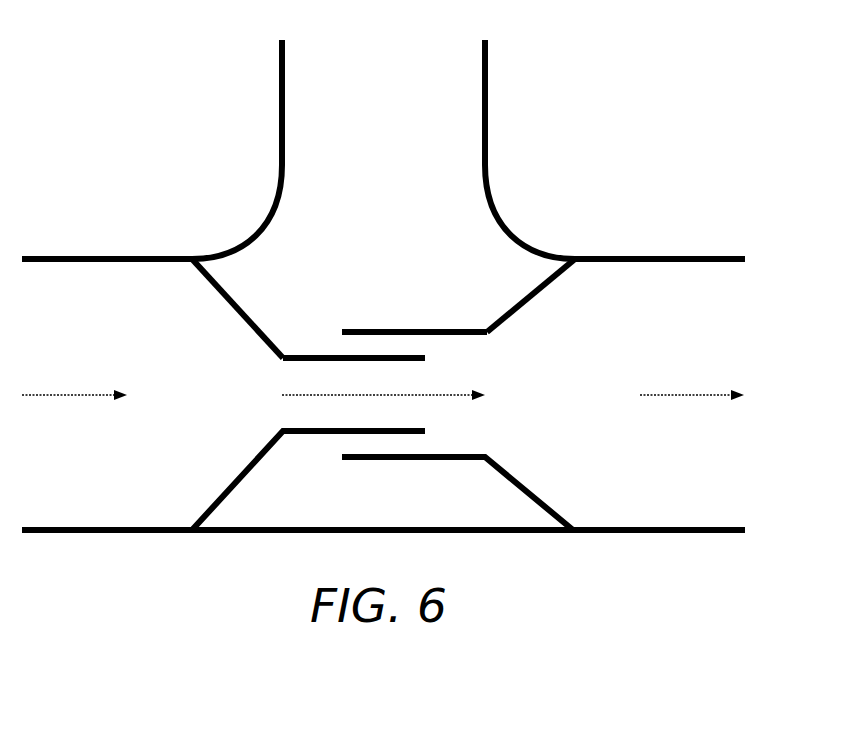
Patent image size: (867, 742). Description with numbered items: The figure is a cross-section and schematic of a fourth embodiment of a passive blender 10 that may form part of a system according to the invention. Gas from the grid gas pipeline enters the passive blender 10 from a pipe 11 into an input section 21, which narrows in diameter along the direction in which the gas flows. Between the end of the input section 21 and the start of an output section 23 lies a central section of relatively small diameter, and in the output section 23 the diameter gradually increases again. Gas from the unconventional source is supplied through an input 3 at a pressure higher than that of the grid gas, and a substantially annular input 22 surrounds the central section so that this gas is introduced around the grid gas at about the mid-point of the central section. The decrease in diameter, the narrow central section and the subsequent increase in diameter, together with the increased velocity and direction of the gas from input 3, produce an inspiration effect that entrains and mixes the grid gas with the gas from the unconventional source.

The input from the unconventional source 3 is at (252, 141).
The passive blender 10 is at (705, 90).
The pipe 11 is at (68, 533).
The input section 21 is at (228, 308).
The input from the unconventional source 22 is at (422, 348).
The output section 23 is at (533, 297).